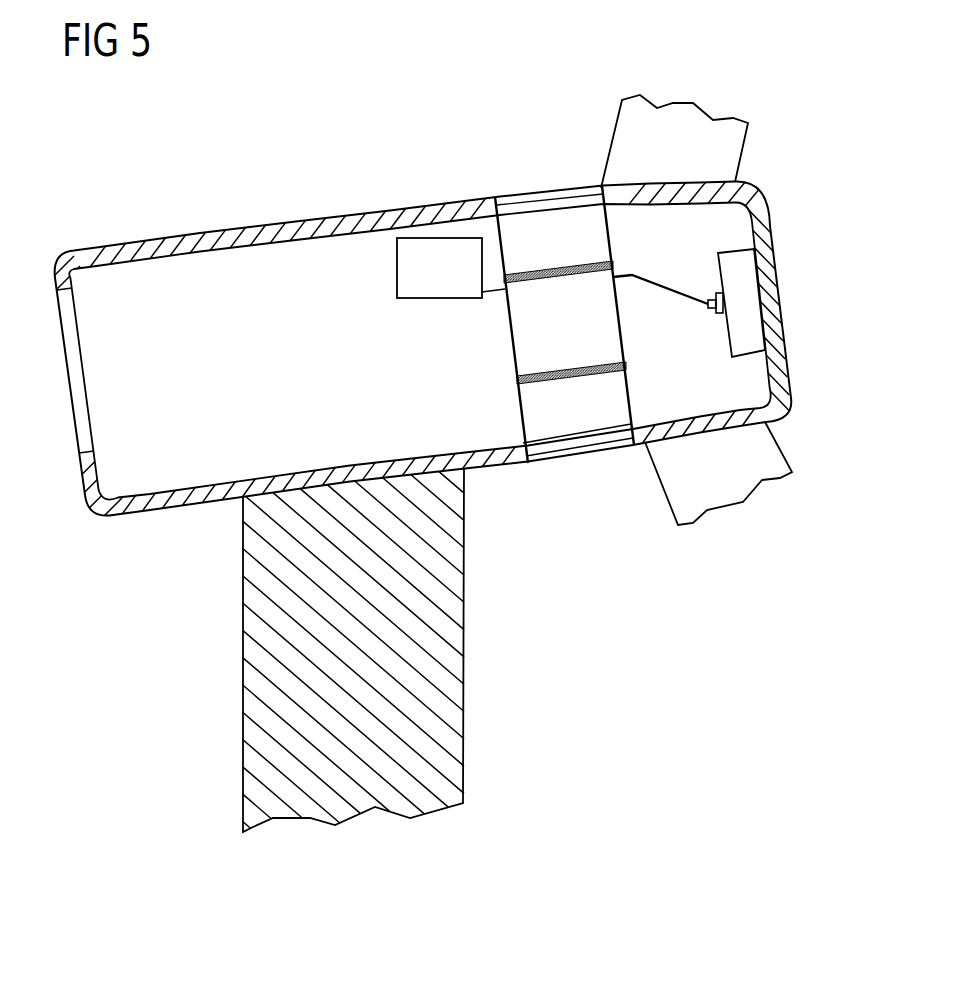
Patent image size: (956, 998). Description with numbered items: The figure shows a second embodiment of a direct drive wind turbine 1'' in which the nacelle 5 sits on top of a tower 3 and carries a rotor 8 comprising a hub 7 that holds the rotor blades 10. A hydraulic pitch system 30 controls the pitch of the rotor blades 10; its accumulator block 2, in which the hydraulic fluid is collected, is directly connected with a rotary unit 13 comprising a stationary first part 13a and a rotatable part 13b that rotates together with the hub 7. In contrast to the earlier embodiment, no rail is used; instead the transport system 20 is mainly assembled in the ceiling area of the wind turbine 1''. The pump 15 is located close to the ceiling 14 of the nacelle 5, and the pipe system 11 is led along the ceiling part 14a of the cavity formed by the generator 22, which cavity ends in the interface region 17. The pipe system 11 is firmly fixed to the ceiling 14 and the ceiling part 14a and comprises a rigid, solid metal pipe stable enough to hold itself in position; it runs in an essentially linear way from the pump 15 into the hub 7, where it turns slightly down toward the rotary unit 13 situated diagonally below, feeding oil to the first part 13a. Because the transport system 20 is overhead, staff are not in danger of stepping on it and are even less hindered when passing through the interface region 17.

The wind turbine 1'' is at (442, 298).
The accumulator block 2 is at (770, 334).
The tower 3 is at (455, 630).
The nacelle 5 is at (152, 515).
The hub 7 is at (756, 192).
The rotor 8 is at (770, 140).
The rotor blades 10 is at (626, 127).
The pipe system 11 is at (666, 290).
The rotary unit 13 is at (710, 298).
The first part 13a is at (711, 312).
The rotatable part 13b is at (719, 292).
The ceiling 14 is at (285, 255).
The ceiling part 14a is at (521, 293).
The pump 15 is at (402, 276).
The interface region 17 is at (585, 300).
The transport system 20 is at (496, 303).
The generator 22 is at (545, 243).
The hydraulic pitch system 30 is at (756, 292).